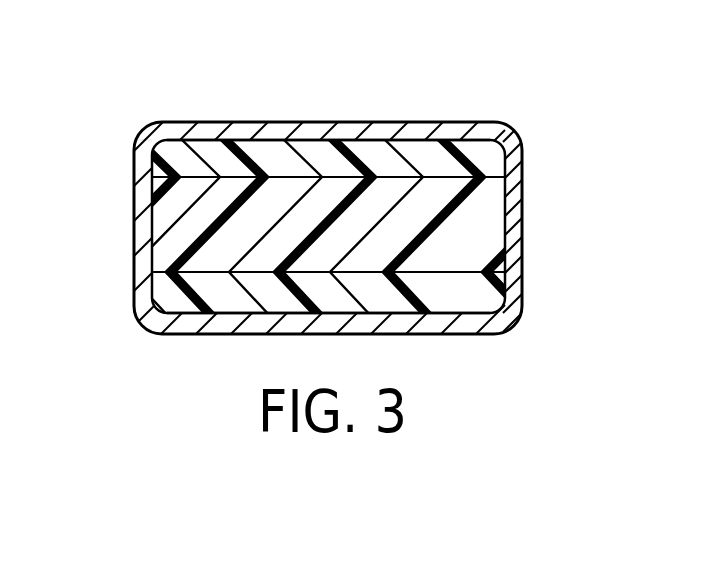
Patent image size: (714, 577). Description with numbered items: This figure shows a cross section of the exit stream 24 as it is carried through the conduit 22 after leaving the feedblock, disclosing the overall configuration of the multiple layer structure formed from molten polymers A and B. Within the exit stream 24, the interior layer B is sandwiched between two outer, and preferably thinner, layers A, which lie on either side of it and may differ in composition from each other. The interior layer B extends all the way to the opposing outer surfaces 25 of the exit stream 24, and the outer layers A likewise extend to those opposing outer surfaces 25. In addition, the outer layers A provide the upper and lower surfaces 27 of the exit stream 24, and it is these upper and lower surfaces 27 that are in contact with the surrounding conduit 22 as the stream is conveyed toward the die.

The conduit 22 is at (243, 122).
The exit stream 24 is at (415, 133).
The opposing outer surfaces 25 is at (506, 190).
The upper and lower surfaces 27 is at (328, 122).
The layer A is at (505, 148).
The layer B is at (481, 218).